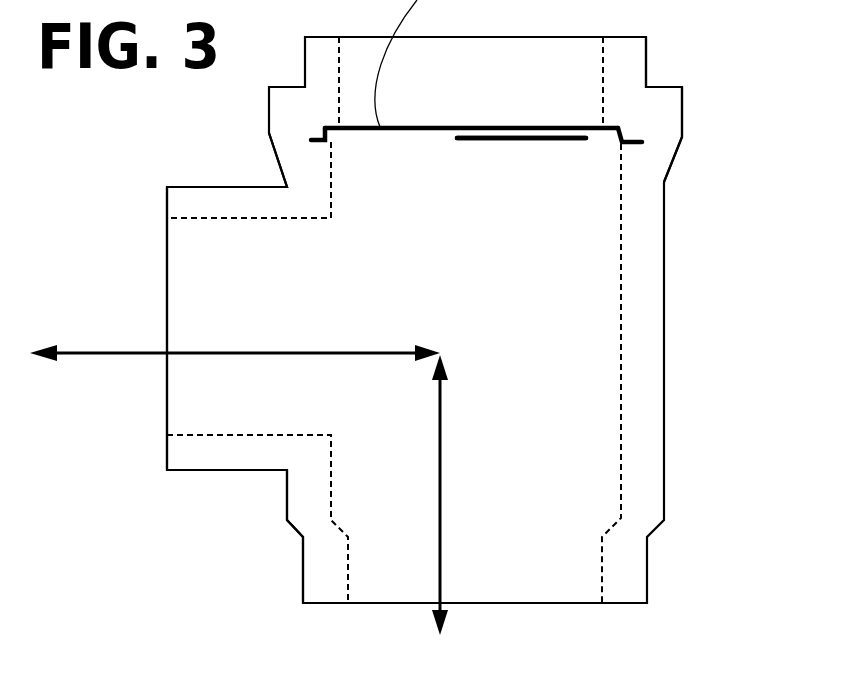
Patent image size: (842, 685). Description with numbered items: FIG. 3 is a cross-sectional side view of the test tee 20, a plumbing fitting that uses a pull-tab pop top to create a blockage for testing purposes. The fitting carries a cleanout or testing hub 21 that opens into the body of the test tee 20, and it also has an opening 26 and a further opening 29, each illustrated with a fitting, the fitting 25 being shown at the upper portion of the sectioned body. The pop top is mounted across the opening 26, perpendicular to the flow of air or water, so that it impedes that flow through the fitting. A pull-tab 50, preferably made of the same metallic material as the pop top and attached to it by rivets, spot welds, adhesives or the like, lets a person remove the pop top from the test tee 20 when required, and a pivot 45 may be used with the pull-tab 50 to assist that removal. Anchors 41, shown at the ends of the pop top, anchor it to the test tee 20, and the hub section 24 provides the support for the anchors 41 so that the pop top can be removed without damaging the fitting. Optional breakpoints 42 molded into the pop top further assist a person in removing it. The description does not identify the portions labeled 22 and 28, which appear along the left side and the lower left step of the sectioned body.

The test tee 20 is at (665, 360).
The cleanout or testing hub 21 is at (200, 186).
The left projection 22 is at (201, 287).
The hub section 24 is at (683, 112).
The fitting 25 is at (648, 61).
The opening 26 is at (375, 45).
The lower left step 28 is at (303, 547).
The opening 29 is at (408, 587).
The anchors 41 is at (318, 133).
The breakpoints 42 is at (340, 129).
The pivot 45 is at (585, 133).
The pull-tab 50 is at (508, 142).